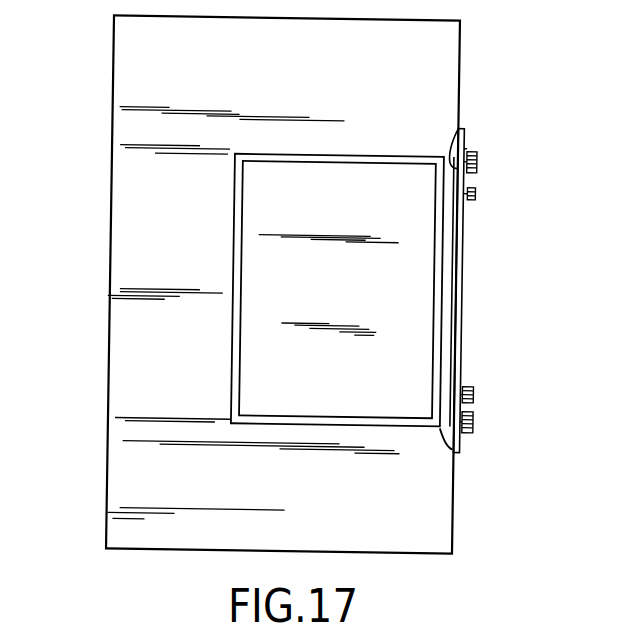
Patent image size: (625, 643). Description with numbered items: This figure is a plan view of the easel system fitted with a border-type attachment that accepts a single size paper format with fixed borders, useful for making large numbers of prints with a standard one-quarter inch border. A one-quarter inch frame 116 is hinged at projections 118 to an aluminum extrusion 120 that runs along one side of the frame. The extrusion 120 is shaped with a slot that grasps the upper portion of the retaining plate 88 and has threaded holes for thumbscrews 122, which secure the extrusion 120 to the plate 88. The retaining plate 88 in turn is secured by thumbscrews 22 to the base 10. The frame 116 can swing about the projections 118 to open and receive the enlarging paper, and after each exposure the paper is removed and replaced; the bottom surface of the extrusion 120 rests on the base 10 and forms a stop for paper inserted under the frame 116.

The base 10 is at (104, 89).
The frame 116 is at (375, 129).
The projections 118 is at (458, 125).
The aluminum extrusion 120 is at (448, 285).
The retaining plate 88 is at (468, 143).
The fastener knob 22 is at (476, 165).
The thumbscrews 122 is at (475, 195).